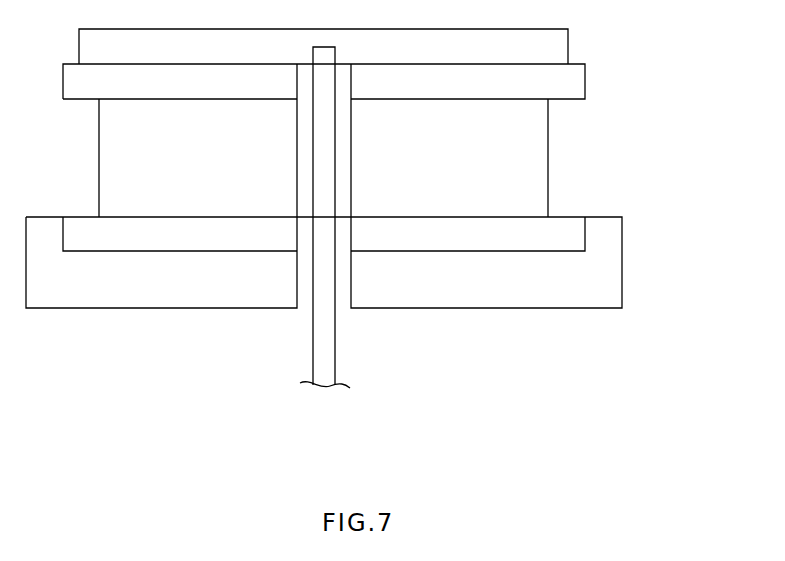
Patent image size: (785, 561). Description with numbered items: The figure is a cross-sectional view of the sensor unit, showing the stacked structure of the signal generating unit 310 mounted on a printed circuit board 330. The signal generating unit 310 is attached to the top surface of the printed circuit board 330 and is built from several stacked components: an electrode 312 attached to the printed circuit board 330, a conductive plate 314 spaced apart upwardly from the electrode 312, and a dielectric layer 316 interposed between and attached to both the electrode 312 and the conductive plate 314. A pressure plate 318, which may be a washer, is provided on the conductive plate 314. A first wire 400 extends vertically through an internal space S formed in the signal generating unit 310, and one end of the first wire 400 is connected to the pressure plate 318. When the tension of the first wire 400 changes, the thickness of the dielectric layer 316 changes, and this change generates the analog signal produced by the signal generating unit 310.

The signal generating unit 310 is at (647, 42).
The electrode 312 is at (570, 233).
The conductive plate 314 is at (575, 81).
The dielectric layer 316 is at (532, 157).
The pressure plate 318 is at (558, 46).
The printed circuit board 330 is at (90, 295).
The first wire 400 is at (323, 348).
The internal space S is at (307, 157).